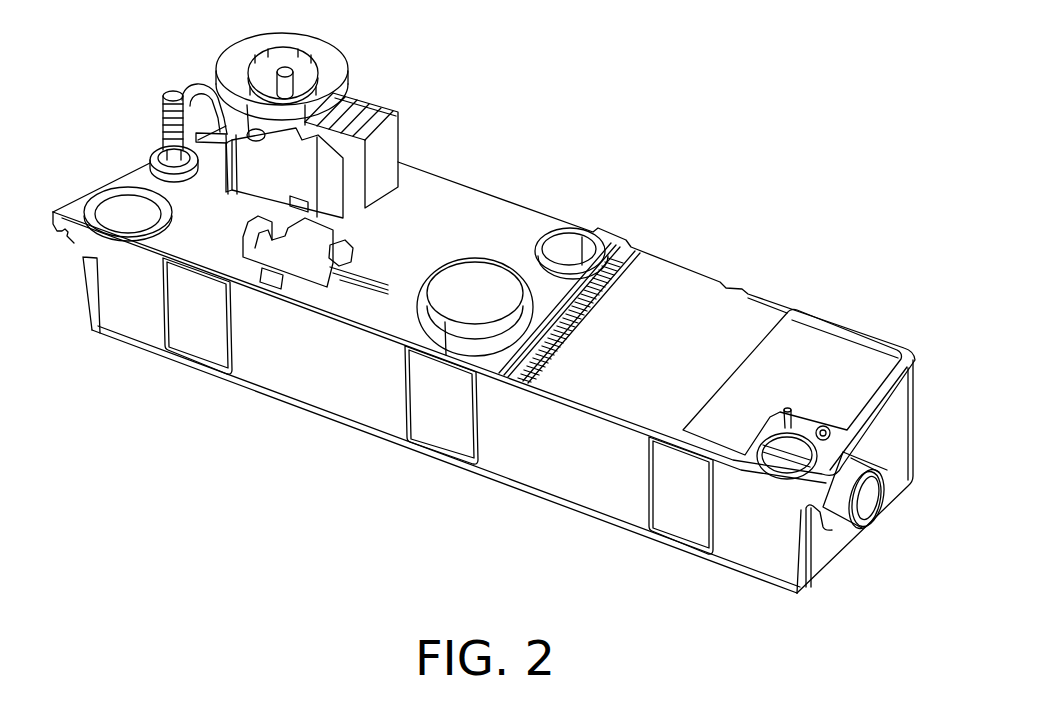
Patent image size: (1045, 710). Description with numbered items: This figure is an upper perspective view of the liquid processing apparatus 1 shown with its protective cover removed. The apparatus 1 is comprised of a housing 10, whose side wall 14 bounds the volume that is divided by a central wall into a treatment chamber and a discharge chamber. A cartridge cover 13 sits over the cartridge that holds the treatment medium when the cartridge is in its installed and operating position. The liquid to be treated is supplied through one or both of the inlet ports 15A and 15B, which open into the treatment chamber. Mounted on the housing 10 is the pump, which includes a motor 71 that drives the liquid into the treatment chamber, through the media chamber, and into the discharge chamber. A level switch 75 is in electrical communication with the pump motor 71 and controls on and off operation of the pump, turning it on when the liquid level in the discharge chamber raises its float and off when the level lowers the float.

The apparatus 1 is at (587, 116).
The housing 10 is at (313, 433).
The cartridge cover 13 is at (693, 290).
The side wall 14 is at (560, 487).
The inlet port 15A is at (870, 501).
The inlet port 15B is at (770, 470).
The motor 71 is at (374, 96).
The level switch 75 is at (368, 242).